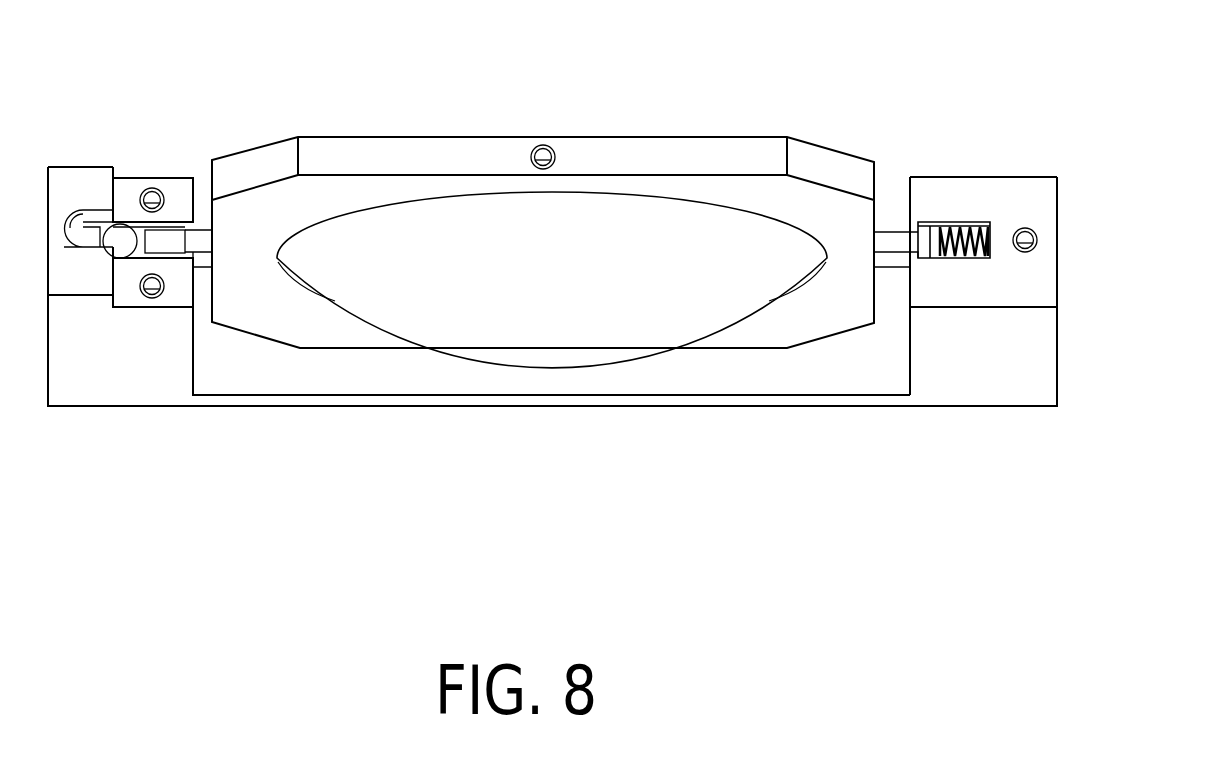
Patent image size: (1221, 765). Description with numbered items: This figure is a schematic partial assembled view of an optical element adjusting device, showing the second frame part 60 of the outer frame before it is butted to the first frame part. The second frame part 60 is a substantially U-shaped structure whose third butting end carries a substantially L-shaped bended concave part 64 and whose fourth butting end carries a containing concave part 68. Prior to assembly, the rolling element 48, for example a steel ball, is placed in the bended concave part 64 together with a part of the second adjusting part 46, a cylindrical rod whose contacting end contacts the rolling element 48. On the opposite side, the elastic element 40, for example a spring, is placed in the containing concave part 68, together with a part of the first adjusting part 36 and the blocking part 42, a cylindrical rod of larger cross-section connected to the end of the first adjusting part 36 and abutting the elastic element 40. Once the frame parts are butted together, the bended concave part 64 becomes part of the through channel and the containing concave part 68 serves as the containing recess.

The first adjusting part 36 is at (890, 242).
The elastic element 40 is at (947, 260).
The blocking part 42 is at (932, 236).
The second adjusting part 46 is at (178, 238).
The rolling element 48 is at (120, 238).
The second frame part 60 is at (1033, 367).
The bended concave part 64 is at (138, 245).
The containing concave part 68 is at (970, 238).